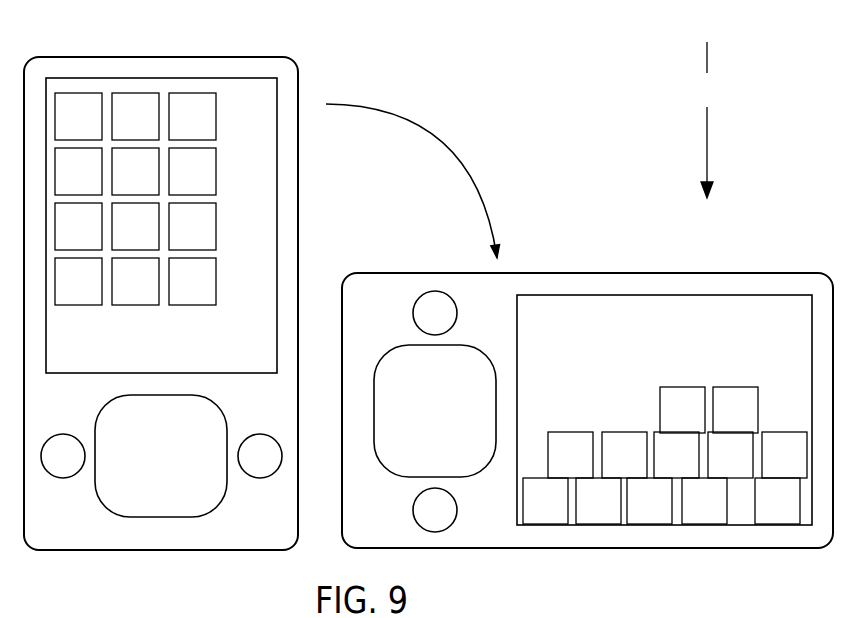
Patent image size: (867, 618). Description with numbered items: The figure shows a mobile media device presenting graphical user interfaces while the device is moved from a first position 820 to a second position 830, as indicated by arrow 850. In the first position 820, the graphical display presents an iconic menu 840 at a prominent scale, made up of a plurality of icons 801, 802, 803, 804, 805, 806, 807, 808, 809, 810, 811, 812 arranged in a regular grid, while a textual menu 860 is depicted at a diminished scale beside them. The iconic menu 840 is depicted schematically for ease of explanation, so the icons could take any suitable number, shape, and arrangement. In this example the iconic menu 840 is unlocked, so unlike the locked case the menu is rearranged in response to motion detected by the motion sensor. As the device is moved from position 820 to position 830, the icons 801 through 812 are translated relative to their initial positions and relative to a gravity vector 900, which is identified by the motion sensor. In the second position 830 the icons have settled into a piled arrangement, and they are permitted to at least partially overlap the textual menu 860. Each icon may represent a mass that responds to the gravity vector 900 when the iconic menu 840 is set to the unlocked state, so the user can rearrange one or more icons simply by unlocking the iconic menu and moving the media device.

The icon 801 is at (94, 127).
The icon 802 is at (150, 127).
The icon 803 is at (208, 127).
The icon 804 is at (94, 182).
The icon 805 is at (150, 182).
The icon 806 is at (208, 182).
The icon 807 is at (94, 237).
The icon 808 is at (150, 237).
The icon 809 is at (208, 237).
The icon 810 is at (94, 292).
The icon 811 is at (150, 292).
The icon 812 is at (208, 292).
The first position 820 is at (299, 81).
The second position 830 is at (602, 272).
The iconic menu 840 is at (128, 88).
The arrow 850 is at (413, 181).
The textual menu 860 is at (249, 87).
The gravity vector 900 is at (707, 120).